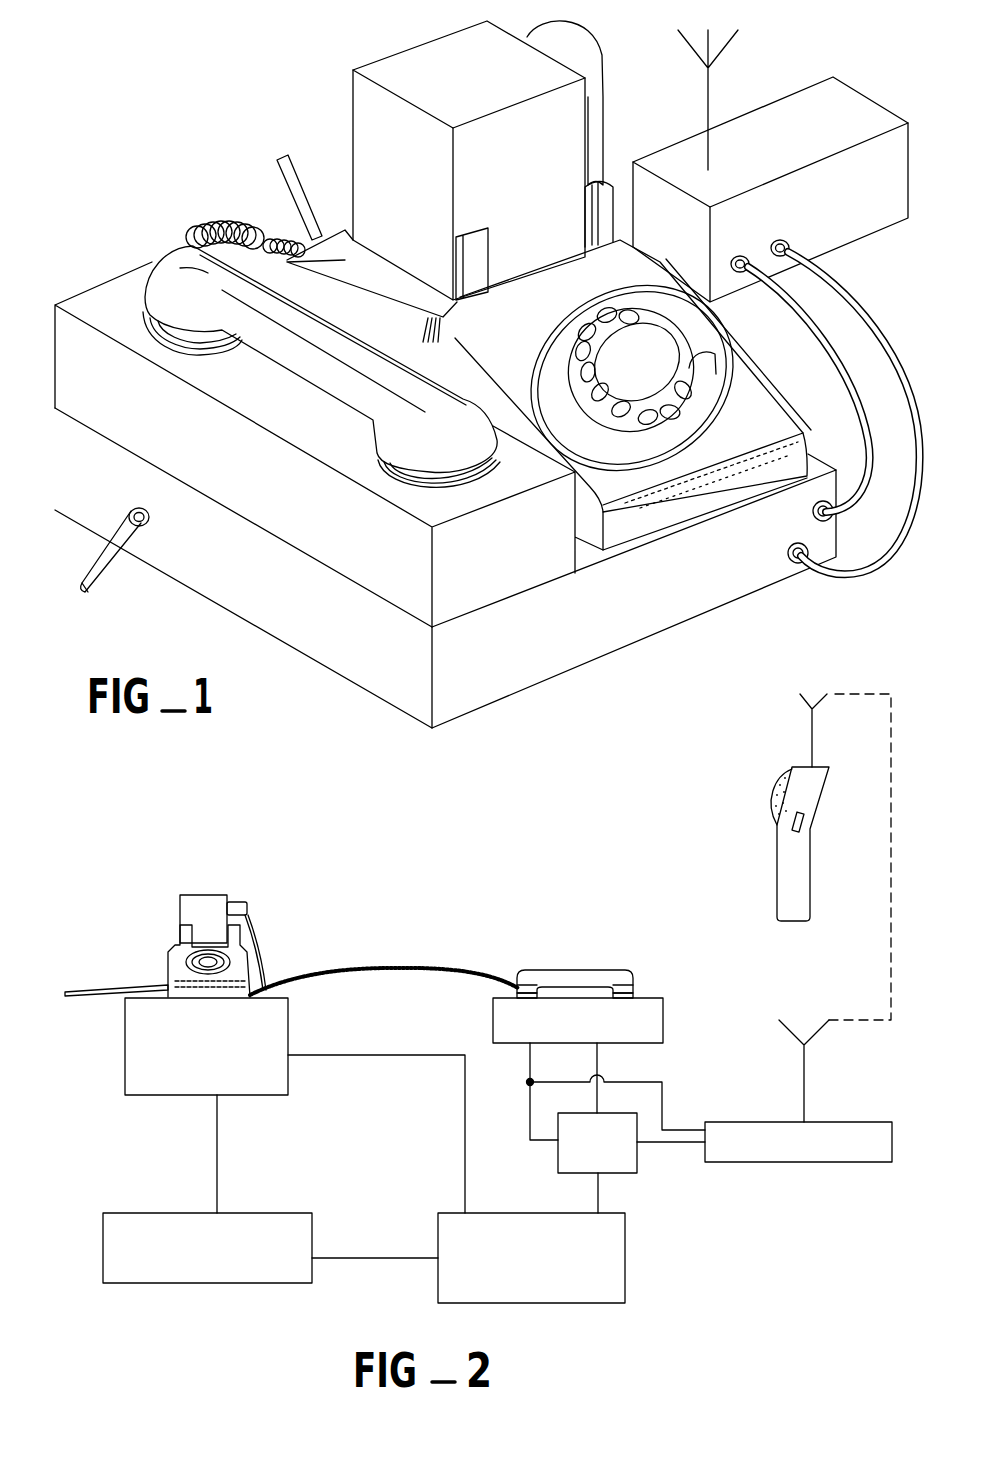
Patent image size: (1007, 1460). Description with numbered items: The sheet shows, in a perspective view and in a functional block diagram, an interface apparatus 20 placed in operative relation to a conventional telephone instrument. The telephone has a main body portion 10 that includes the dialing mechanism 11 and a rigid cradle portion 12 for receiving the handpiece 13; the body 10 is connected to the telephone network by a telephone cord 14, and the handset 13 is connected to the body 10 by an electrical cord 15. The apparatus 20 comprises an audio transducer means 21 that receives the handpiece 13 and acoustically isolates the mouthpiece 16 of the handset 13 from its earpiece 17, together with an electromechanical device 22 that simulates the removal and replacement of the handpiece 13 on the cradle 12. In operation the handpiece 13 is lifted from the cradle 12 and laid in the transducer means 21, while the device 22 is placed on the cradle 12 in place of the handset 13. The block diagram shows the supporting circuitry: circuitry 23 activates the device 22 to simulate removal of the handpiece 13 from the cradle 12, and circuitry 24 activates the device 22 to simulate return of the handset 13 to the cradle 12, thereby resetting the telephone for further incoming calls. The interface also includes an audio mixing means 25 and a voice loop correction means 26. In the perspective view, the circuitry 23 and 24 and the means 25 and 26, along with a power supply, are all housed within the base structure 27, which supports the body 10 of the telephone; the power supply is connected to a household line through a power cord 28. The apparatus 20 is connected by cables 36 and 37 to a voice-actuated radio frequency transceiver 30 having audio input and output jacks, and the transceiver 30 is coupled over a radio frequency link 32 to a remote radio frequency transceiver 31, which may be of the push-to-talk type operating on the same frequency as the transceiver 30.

In FIG. 1, the main body portion 10 is at (633, 395).
In FIG. 2, the main body portion 10 is at (186, 918).
In FIG. 1, the dialing mechanism 11 is at (663, 363).
In FIG. 1, the cradle portion 12 is at (473, 280).
In FIG. 1, the handpiece 13 is at (294, 366).
In FIG. 2, the handpiece 13 is at (572, 954).
In FIG. 1, the telephone cord 14 is at (300, 188).
In FIG. 2, the telephone cord 14 is at (100, 988).
In FIG. 1, the electrical cord 15 is at (223, 220).
In FIG. 2, the electrical cord 15 is at (408, 968).
In FIG. 1, the mouthpiece 16 is at (165, 296).
In FIG. 2, the mouthpiece 16 is at (520, 983).
In FIG. 1, the earpiece 17 is at (390, 437).
In FIG. 2, the earpiece 17 is at (618, 978).
In FIG. 1, the apparatus 20 is at (122, 246).
In FIG. 2, the apparatus 20 is at (142, 1153).
In FIG. 1, the audio transducer means 21 is at (329, 444).
In FIG. 2, the audio transducer means 21 is at (650, 1000).
In FIG. 1, the device 22 is at (445, 181).
In FIG. 2, the device 22 is at (212, 902).
In FIG. 2, the circuitry 23 is at (282, 1077).
In FIG. 2, the circuitry 24 is at (127, 1222).
In FIG. 2, the audio mixing means 25 is at (615, 1260).
In FIG. 2, the voice loop correction means 26 is at (570, 1165).
In FIG. 1, the base structure 27 is at (585, 660).
In FIG. 1, the power cord 28 is at (113, 551).
In FIG. 1, the radio frequency transceiver 30 is at (770, 166).
In FIG. 2, the radio frequency transceiver 30 is at (738, 1163).
In FIG. 2, the remote radio frequency transceiver 31 is at (795, 905).
In FIG. 2, the radio frequency link 32 is at (891, 903).
In FIG. 1, the cable 36 is at (838, 372).
In FIG. 2, the cable 36 is at (662, 1100).
In FIG. 1, the cable 37 is at (867, 331).
In FIG. 2, the cable 37 is at (670, 1145).